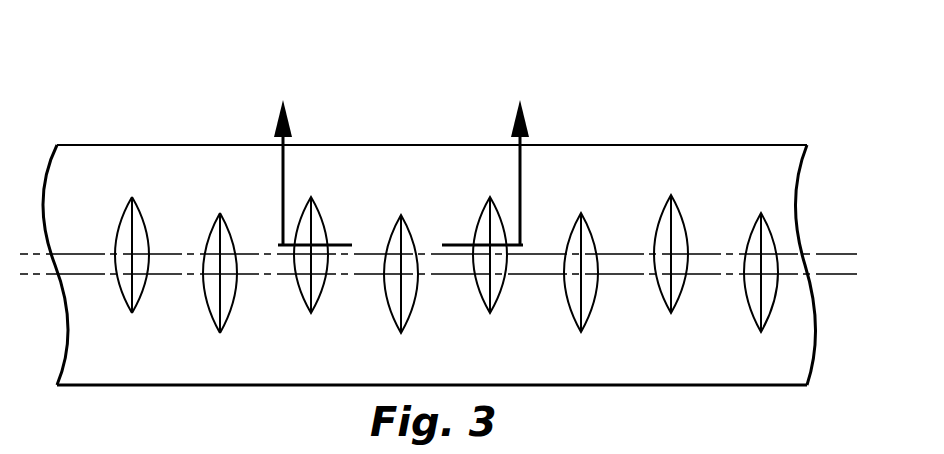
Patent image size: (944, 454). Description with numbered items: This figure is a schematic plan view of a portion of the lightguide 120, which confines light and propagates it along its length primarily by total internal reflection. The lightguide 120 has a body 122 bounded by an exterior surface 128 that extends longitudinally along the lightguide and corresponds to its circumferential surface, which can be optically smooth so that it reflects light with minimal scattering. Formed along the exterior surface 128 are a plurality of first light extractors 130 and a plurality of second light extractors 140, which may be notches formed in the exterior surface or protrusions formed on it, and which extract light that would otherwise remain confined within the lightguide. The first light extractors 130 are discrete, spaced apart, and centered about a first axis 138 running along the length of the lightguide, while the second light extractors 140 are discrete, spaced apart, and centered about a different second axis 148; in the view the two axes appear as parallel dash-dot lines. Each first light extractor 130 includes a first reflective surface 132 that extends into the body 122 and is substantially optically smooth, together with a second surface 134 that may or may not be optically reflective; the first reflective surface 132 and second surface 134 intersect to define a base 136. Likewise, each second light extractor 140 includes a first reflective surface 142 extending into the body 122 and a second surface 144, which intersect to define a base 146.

The lightguide 120 is at (456, 221).
The body 122 is at (409, 165).
The exterior surface 128 is at (625, 142).
The first light extractor 130 is at (132, 246).
The first reflective surface 132 is at (125, 223).
The second surface 134 is at (138, 220).
The base 136 is at (132, 293).
The second light extractor 140 is at (226, 243).
The first reflective surface 142 is at (213, 240).
The second surface 144 is at (227, 237).
The base 146 is at (223, 310).
The first axis 138 is at (847, 250).
The second axis 148 is at (847, 277).